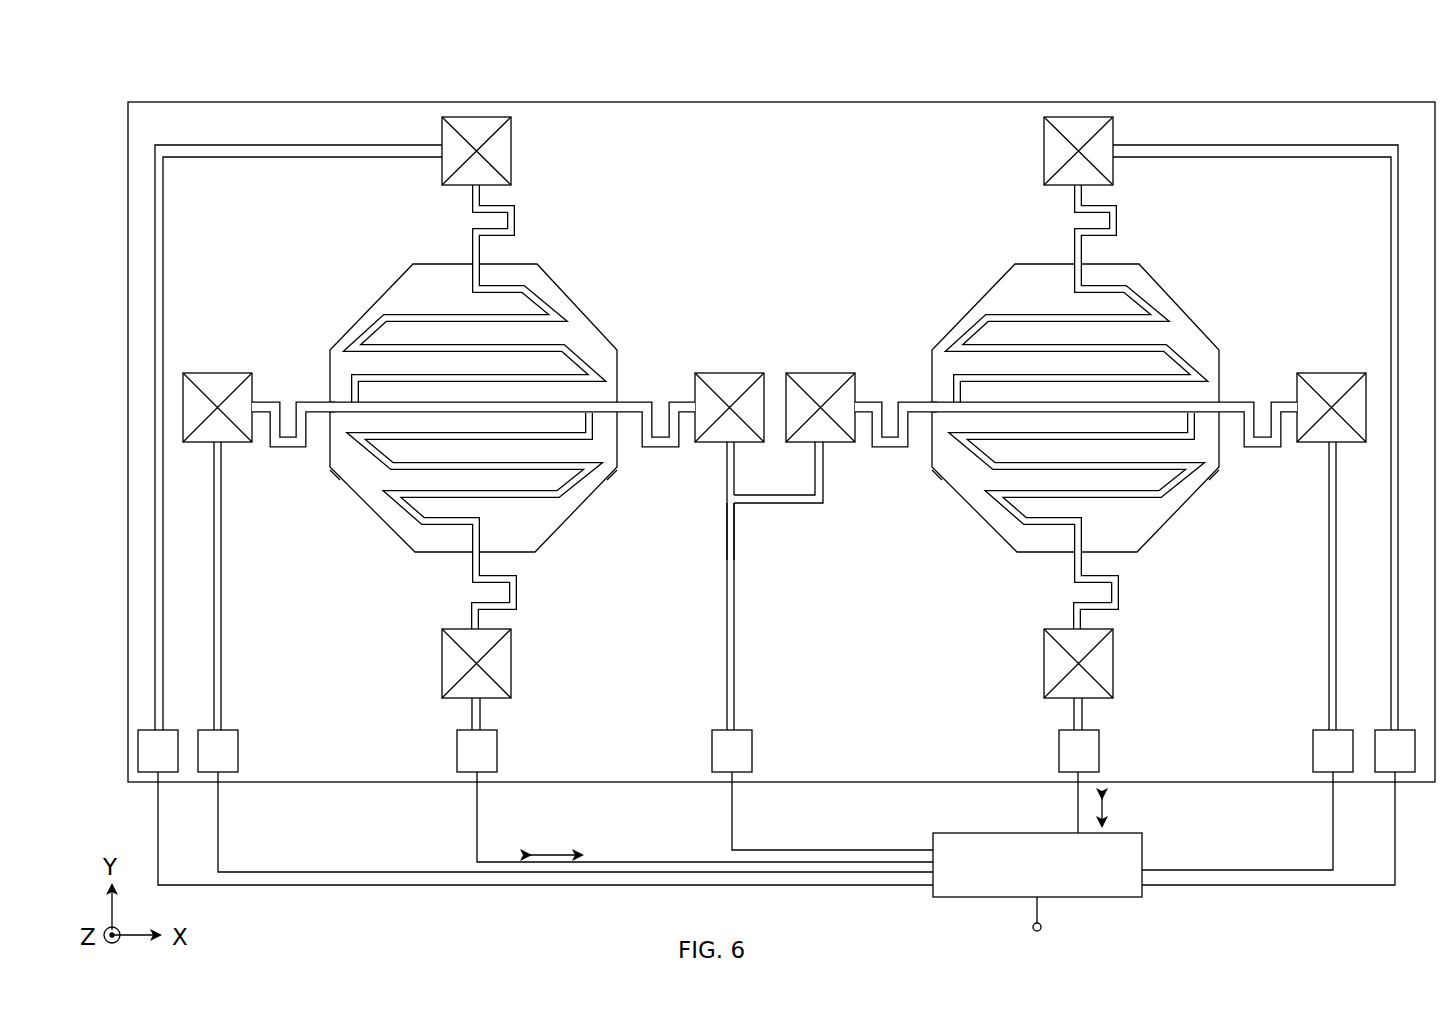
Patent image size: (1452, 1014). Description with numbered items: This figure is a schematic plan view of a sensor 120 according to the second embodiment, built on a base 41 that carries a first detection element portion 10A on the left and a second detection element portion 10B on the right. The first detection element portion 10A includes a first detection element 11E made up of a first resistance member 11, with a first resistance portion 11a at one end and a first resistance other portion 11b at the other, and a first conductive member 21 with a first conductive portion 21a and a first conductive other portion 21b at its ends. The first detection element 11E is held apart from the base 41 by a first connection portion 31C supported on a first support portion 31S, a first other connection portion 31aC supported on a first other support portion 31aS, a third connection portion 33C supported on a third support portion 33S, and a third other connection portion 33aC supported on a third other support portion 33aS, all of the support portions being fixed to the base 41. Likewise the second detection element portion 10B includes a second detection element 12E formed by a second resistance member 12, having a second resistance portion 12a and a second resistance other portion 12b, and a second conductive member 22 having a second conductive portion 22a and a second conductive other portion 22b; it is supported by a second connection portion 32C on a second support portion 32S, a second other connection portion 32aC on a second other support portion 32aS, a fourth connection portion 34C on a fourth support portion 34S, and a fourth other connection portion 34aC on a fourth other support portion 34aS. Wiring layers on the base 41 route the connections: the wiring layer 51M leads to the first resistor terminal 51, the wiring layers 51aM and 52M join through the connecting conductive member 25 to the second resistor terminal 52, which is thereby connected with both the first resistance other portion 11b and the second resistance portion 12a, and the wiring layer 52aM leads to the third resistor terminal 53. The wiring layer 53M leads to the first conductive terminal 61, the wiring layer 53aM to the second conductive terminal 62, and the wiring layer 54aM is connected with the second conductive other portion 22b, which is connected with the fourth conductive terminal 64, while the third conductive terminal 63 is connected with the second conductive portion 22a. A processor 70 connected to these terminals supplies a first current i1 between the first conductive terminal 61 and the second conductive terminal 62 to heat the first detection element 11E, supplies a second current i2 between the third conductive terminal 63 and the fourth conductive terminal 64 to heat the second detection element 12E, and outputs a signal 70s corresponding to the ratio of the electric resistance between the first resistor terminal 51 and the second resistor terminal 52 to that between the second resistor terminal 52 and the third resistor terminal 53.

The sensor 120 is at (781, 493).
The base 41 is at (238, 130).
The first detection element portion 10A is at (612, 233).
The second detection element portion 10B is at (985, 233).
The first resistance member 11 is at (333, 355).
The first detection element 11E is at (478, 381).
The first resistance portion 11a is at (334, 472).
The first resistance other portion 11b is at (614, 472).
The second resistance member 12 is at (938, 375).
The second detection element 12E is at (1075, 381).
The second resistance portion 12a is at (936, 472).
The second resistance other portion 12b is at (1216, 472).
The first conductive member 21 is at (474, 396).
The first conductive portion 21a is at (470, 545).
The first conductive other portion 21b is at (474, 262).
The second conductive member 22 is at (1076, 396).
The second conductive portion 22a is at (1072, 545).
The second conductive other portion 22b is at (1076, 262).
The connecting conductive member 25 is at (773, 507).
The first support portion 31S is at (225, 385).
The first other support portion 31aS is at (730, 390).
The first connection portion 31C is at (290, 403).
The first other connection portion 31aC is at (655, 403).
The second support portion 32S is at (822, 392).
The second other support portion 32aS is at (1335, 390).
The second connection portion 32C is at (888, 406).
The second other connection portion 32aC is at (1255, 403).
The third support portion 33S is at (502, 672).
The third other support portion 33aS is at (497, 143).
The third connection portion 33C is at (516, 603).
The third other connection portion 33aC is at (515, 212).
The fourth support portion 34S is at (1104, 672).
The fourth other support portion 34aS is at (1100, 143).
The fourth connection portion 34C is at (1118, 603).
The fourth other connection portion 34aC is at (1117, 212).
The wiring layer 51M is at (222, 657).
The wiring layer 51aM is at (727, 460).
The wiring layer 52M is at (823, 467).
The wiring layer 52aM is at (1330, 545).
The wiring layer 53M is at (472, 712).
The wiring layer 53aM is at (163, 202).
The wiring layer 54aM is at (1391, 202).
The first resistor terminal 51 is at (222, 762).
The second resistor terminal 52 is at (735, 762).
The third resistor terminal 53 is at (1343, 762).
The first conductive terminal 61 is at (482, 762).
The second conductive terminal 62 is at (165, 762).
The third conductive terminal 63 is at (1073, 770).
The fourth conductive terminal 64 is at (1400, 762).
The processor 70 is at (952, 833).
The signal 70s is at (1042, 928).
The first current i1 is at (556, 829).
The second current i2 is at (1108, 812).